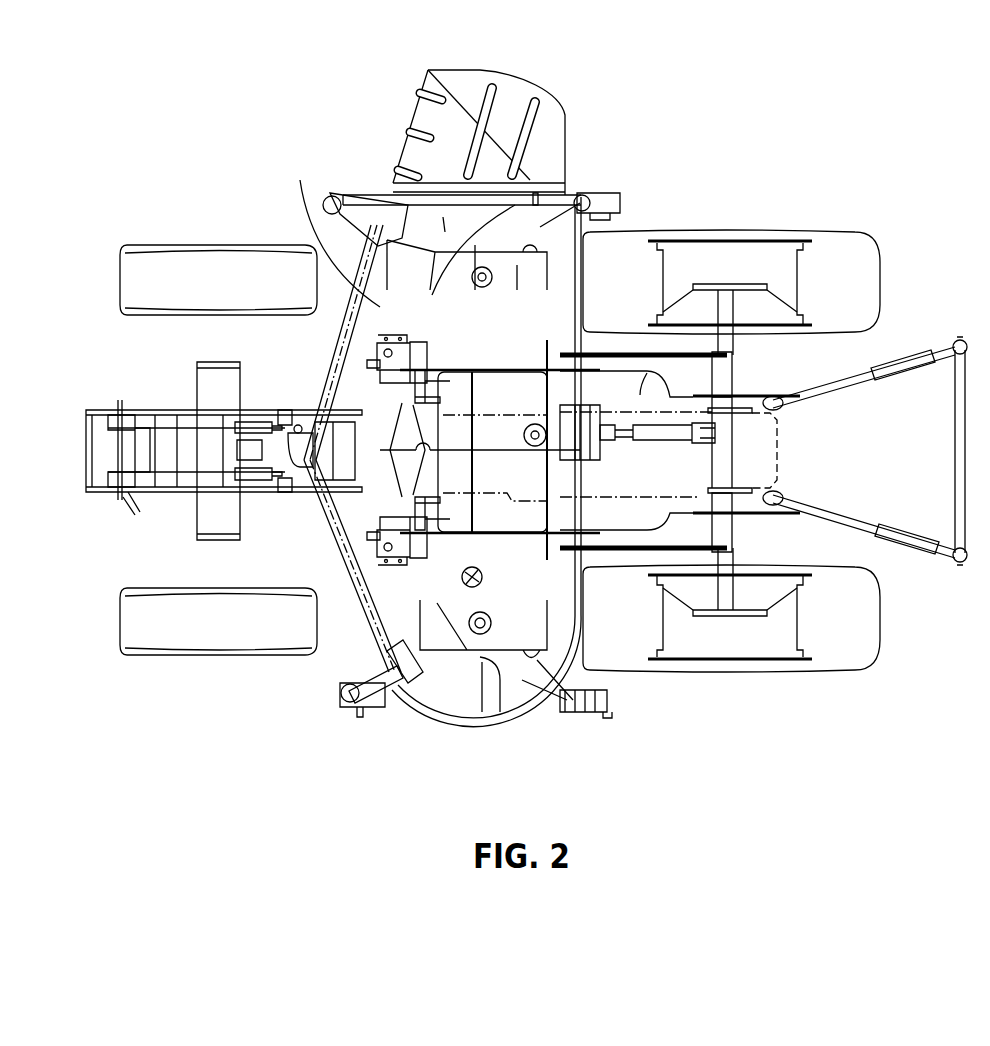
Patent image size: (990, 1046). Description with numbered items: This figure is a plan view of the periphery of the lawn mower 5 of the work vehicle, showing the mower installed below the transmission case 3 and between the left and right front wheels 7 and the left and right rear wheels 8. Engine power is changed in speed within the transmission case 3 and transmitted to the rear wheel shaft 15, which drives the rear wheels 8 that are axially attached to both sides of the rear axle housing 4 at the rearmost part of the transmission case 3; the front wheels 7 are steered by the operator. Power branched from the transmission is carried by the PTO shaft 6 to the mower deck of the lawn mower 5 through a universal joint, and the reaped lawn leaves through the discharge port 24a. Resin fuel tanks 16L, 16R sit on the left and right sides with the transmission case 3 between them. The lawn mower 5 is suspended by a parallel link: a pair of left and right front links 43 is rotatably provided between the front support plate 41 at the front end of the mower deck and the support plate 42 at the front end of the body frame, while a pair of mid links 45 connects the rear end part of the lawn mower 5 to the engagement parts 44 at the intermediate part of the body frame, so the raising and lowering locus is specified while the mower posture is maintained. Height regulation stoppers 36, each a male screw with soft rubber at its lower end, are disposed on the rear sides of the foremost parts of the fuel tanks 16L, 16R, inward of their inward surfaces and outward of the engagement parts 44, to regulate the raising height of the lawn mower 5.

The transmission case 3 is at (388, 405).
The rear axle housing 4 is at (745, 350).
The lawn mower 5 is at (443, 217).
The PTO shaft 6 is at (690, 497).
The front wheel 7 is at (200, 258).
The rear wheel 8 is at (845, 240).
The rear wheel shaft 15 is at (730, 293).
The fuel tank 16R is at (392, 313).
The fuel tank 16L is at (508, 643).
The discharge port 24a is at (520, 90).
The height regulation stopper 36 is at (372, 353).
The front support plate 41 is at (300, 493).
The support plate 42 is at (130, 408).
The front link 43 is at (187, 473).
The engagement part 44 is at (377, 385).
The mid link 45 is at (612, 367).